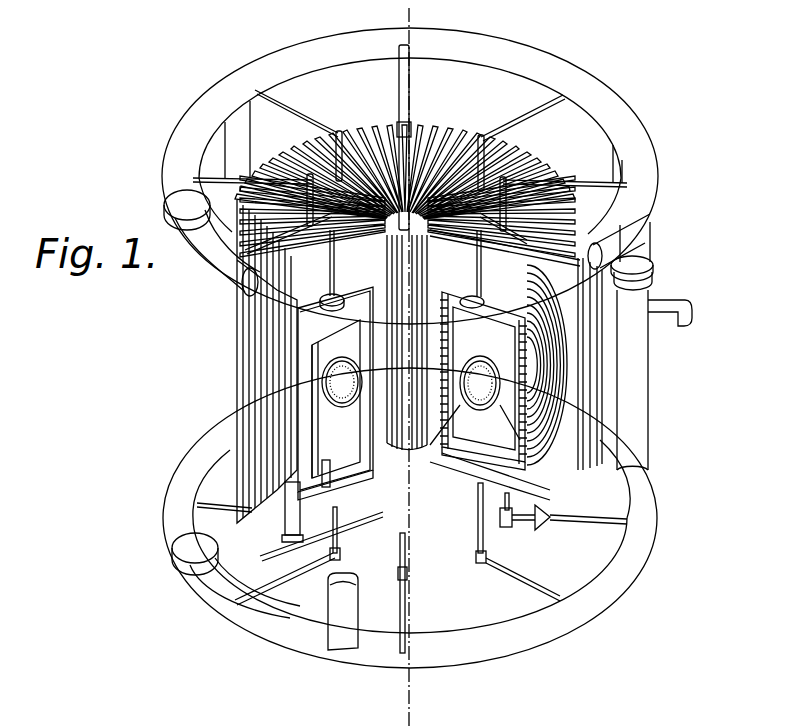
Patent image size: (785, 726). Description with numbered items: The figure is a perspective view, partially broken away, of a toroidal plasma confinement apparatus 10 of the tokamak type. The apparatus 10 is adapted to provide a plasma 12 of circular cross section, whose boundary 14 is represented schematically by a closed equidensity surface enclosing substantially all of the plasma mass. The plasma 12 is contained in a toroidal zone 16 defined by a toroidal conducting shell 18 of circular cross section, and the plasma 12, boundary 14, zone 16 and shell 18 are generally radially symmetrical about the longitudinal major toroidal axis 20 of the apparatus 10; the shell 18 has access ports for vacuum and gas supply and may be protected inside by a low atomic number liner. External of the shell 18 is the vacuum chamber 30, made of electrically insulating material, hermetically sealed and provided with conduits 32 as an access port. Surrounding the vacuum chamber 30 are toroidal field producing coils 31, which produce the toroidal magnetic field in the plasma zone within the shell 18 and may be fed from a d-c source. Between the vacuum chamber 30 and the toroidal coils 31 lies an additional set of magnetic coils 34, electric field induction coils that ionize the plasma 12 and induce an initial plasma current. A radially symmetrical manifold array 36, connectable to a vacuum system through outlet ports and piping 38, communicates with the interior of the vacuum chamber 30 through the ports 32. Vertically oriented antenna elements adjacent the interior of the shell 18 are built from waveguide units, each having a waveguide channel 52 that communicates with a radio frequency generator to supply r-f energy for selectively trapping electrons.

The toroidal plasma confinement apparatus 10 is at (211, 60).
The plasma 12 is at (345, 395).
The boundary 14 is at (497, 383).
The toroidal zone 16 is at (481, 407).
The toroidal conducting shell 18 is at (484, 402).
The longitudinal major toroidal axis 20 is at (416, 708).
The vacuum chamber 30 is at (316, 345).
The toroidal field producing coils 31 is at (296, 302).
The conduits 32 is at (263, 586).
The magnetic coils 34 is at (453, 240).
The manifold array 36 is at (308, 646).
The outlet ports and piping 38 is at (665, 318).
The waveguide channel 52 is at (582, 258).